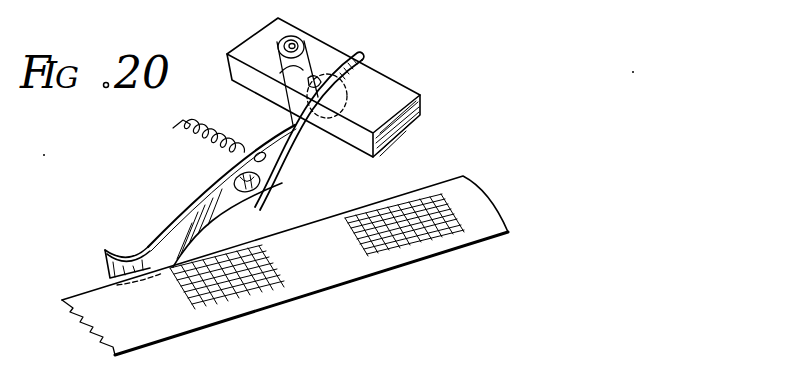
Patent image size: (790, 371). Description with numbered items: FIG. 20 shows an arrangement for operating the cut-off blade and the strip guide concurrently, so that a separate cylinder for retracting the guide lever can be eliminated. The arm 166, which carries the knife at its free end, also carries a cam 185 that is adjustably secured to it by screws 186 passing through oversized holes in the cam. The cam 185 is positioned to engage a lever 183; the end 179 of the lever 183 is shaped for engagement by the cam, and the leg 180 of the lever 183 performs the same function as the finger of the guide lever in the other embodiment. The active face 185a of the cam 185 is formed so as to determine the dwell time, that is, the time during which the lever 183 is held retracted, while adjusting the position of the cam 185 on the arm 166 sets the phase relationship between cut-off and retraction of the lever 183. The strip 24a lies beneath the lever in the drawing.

The strip with mesh patches 24a is at (410, 262).
The arm 166 is at (393, 78).
The end of the lever 179 is at (308, 125).
The leg of the lever 180 is at (248, 214).
The lever 183 is at (167, 218).
The cam 185 is at (282, 96).
The active face of the cam 185a is at (373, 60).
The screws 186 is at (318, 90).